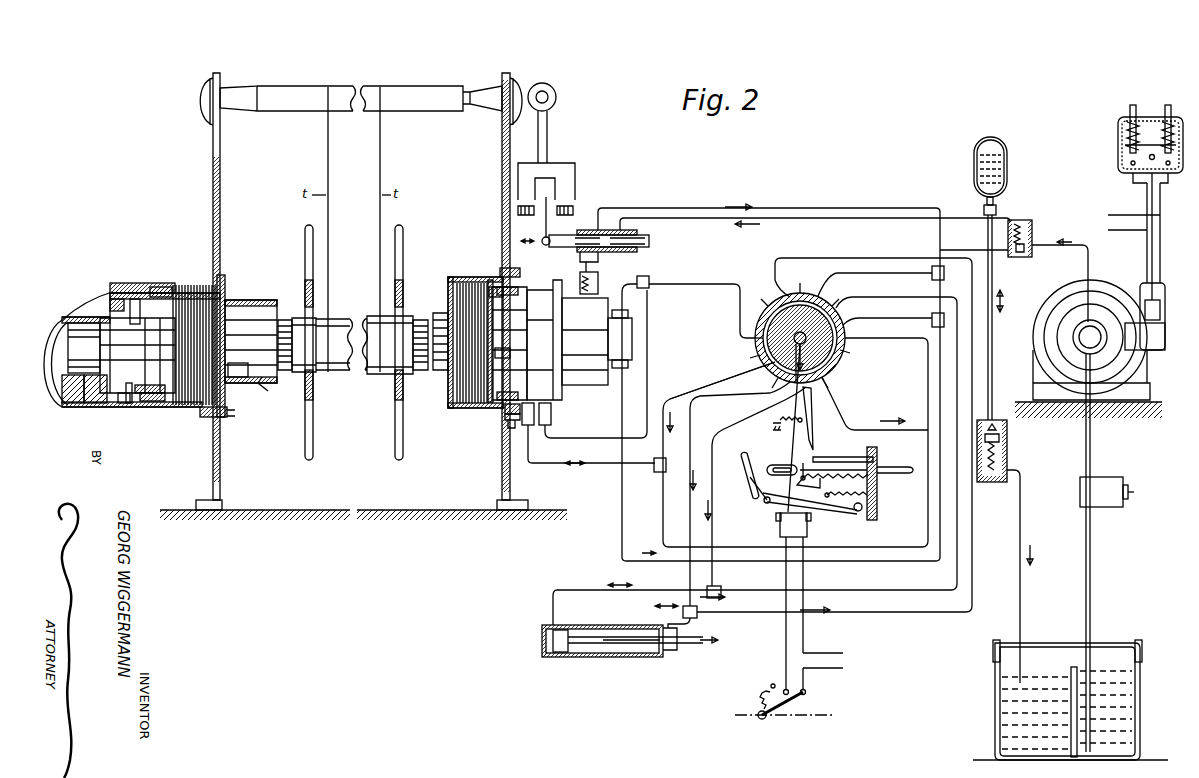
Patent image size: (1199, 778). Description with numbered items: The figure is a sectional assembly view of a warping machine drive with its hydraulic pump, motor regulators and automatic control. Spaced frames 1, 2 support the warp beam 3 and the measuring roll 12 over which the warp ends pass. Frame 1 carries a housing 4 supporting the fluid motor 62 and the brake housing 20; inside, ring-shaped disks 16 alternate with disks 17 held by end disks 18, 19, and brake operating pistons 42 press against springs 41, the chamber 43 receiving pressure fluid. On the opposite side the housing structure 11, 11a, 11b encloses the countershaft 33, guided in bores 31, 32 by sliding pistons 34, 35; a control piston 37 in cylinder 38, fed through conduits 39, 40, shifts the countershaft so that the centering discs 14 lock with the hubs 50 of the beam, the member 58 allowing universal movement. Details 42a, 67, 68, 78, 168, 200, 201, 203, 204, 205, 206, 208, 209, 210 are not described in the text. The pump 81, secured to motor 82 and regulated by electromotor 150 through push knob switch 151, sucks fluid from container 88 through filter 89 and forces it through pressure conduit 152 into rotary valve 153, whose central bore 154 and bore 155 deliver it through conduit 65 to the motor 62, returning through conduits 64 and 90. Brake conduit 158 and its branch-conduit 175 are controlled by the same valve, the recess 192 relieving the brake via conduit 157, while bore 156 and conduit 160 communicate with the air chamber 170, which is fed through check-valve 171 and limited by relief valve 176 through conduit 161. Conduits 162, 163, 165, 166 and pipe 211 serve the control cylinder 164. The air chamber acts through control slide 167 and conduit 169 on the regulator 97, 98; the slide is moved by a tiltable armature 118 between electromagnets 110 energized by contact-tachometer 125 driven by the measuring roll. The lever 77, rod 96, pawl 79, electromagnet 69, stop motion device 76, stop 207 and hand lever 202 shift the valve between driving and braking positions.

The frame 1 is at (502, 466).
The frame 2 is at (213, 466).
The warp beam 3 is at (355, 372).
The housing 4 is at (526, 276).
The housing structure 11 is at (287, 346).
The housing structure 11a is at (158, 287).
The housing structure 11b is at (62, 345).
The measuring roll 12 is at (430, 88).
The centering disc 14 is at (288, 318).
The ring-shaped disk 16 is at (195, 290).
The disk 17 is at (222, 288).
The end disk 18 is at (205, 411).
The end disk 19 is at (178, 290).
The brake housing 20 is at (481, 409).
The cylindrical bore 31 is at (115, 297).
The cylindrical bore 32 is at (258, 305).
The countershaft 33 is at (238, 370).
The sliding piston 34 is at (145, 285).
The sliding piston 35 is at (258, 386).
The control piston 37 is at (95, 300).
The cylinder 38 is at (95, 330).
The conduit 39 is at (65, 407).
The conduit 40 is at (96, 407).
The spring 41 is at (146, 396).
The brake operating piston 42 is at (152, 410).
The seal 42a is at (122, 404).
The chamber 43 is at (127, 408).
The hub 50 is at (264, 378).
The universal movement member 58 is at (418, 322).
The fluid motor 62 is at (597, 341).
The conduit 64 is at (620, 474).
The conduit 65 is at (645, 280).
The pipe 67 is at (588, 442).
The electrical line 68 is at (803, 627).
The electromagnet 69 is at (808, 525).
The stop motion device 76 is at (800, 703).
The lever 77 is at (789, 445).
The bar 78 is at (822, 458).
The pawl 79 is at (771, 506).
The pump 81 is at (1069, 314).
The motor 82 is at (1081, 300).
The container 88 is at (1139, 671).
The filter 89 is at (1125, 490).
The conduit 90 is at (1020, 510).
The rod 96 is at (878, 469).
The regulator 97 is at (580, 266).
The regulator 98 is at (594, 281).
The electromagnet 110 is at (518, 211).
The tiltable armature 118 is at (546, 222).
The contact-tachometer 125 is at (548, 84).
The electromotor 150 is at (1140, 296).
The push knob switch 151 is at (1118, 140).
The pressure conduit 152 is at (944, 250).
The rotary valve 153 is at (810, 333).
The central bore 154 is at (820, 362).
The bore 155 is at (752, 346).
The bore 156 is at (825, 376).
The conduit 157 is at (692, 208).
The brake conduit 158 is at (550, 464).
The conduit 160 is at (870, 430).
The conduit 161 is at (993, 273).
The conduit 162 is at (866, 298).
The conduit 163 is at (850, 258).
The control cylinder 164 is at (610, 657).
The conduit 165 is at (714, 513).
The conduit 166 is at (688, 581).
The control slide 167 is at (645, 245).
The pipe 168 is at (828, 220).
The conduit 169 is at (600, 252).
The air chamber 170 is at (974, 158).
The check-valve 171 is at (1030, 240).
The branch-conduit 175 is at (712, 380).
The relief valve 176 is at (1006, 451).
The recess 192 is at (808, 345).
The piston 200 is at (553, 393).
The pipe 201 is at (907, 316).
The hand lever 202 is at (810, 426).
The spring 203 is at (778, 418).
The pivot 204 is at (860, 513).
The spring 205 is at (862, 497).
The stop 206 is at (772, 422).
The stop 207 is at (868, 455).
The slotted link 208 is at (776, 462).
The slot 209 is at (745, 462).
The lever 210 is at (750, 483).
The pipe 211 is at (848, 276).